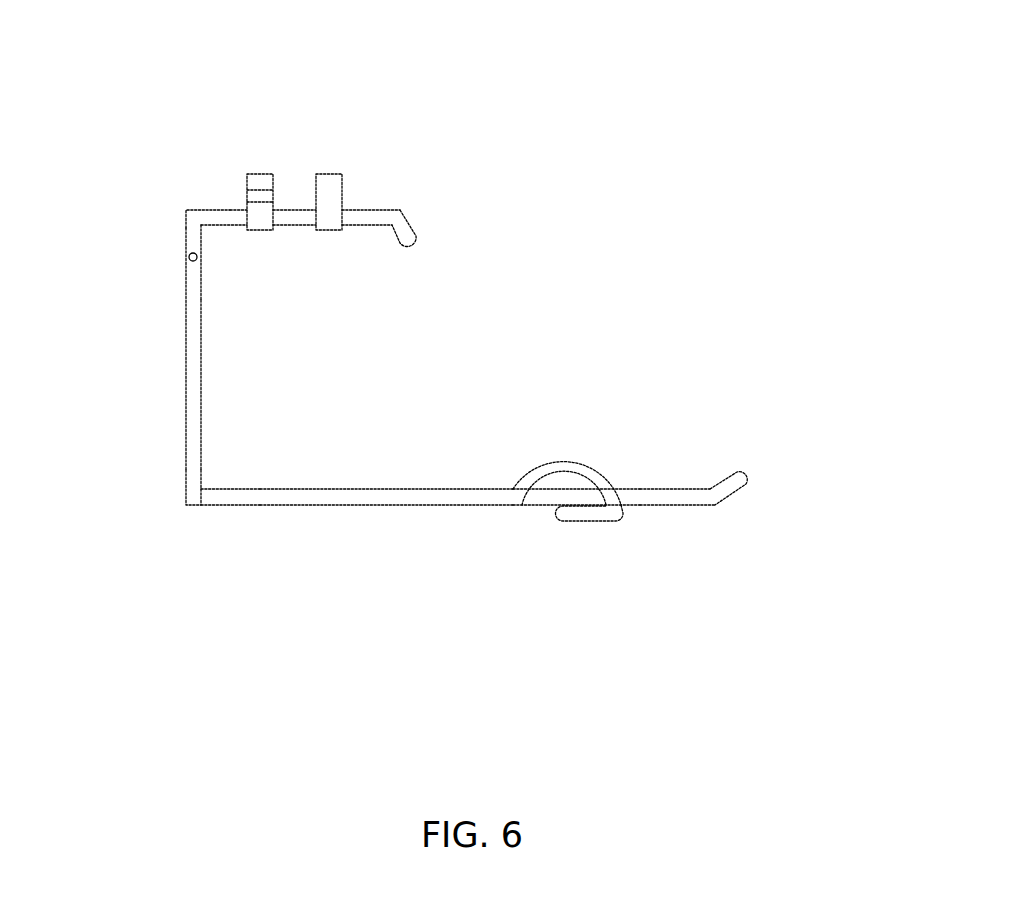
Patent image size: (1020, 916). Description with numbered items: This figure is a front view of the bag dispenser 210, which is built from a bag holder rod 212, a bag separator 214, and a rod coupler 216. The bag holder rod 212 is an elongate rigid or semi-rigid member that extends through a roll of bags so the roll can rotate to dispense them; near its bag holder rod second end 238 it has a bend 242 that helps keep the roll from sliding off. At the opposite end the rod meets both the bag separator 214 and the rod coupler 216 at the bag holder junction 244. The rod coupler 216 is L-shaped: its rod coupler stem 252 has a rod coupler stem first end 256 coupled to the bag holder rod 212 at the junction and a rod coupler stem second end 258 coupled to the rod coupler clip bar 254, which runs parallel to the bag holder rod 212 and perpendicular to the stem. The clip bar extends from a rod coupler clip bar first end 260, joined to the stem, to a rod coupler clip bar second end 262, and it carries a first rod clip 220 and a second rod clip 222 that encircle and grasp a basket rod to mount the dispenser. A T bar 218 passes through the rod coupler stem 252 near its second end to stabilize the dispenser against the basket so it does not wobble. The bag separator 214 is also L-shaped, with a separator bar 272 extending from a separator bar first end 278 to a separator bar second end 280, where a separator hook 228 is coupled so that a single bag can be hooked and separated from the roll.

The bag dispenser 210 is at (598, 96).
The bag holder rod 212 is at (665, 490).
The bag separator 214 is at (386, 604).
The rod coupler 216 is at (447, 190).
The T bar 218 is at (189, 258).
The first rod clip 220 is at (327, 185).
The second rod clip 222 is at (260, 186).
The separator hook 228 is at (573, 510).
The bag holder rod second end 238 is at (736, 478).
The bend 242 is at (708, 497).
The bag holder junction 244 is at (190, 498).
The rod coupler stem 252 is at (193, 359).
The rod coupler clip bar 254 is at (230, 208).
The rod coupler stem first end 256 is at (192, 472).
The rod coupler stem second end 258 is at (197, 237).
The rod coupler clip bar first end 260 is at (190, 208).
The rod coupler clip bar second end 262 is at (408, 233).
The separator bar 272 is at (350, 492).
The separator bar first end 278 is at (215, 495).
The separator bar second end 280 is at (507, 495).